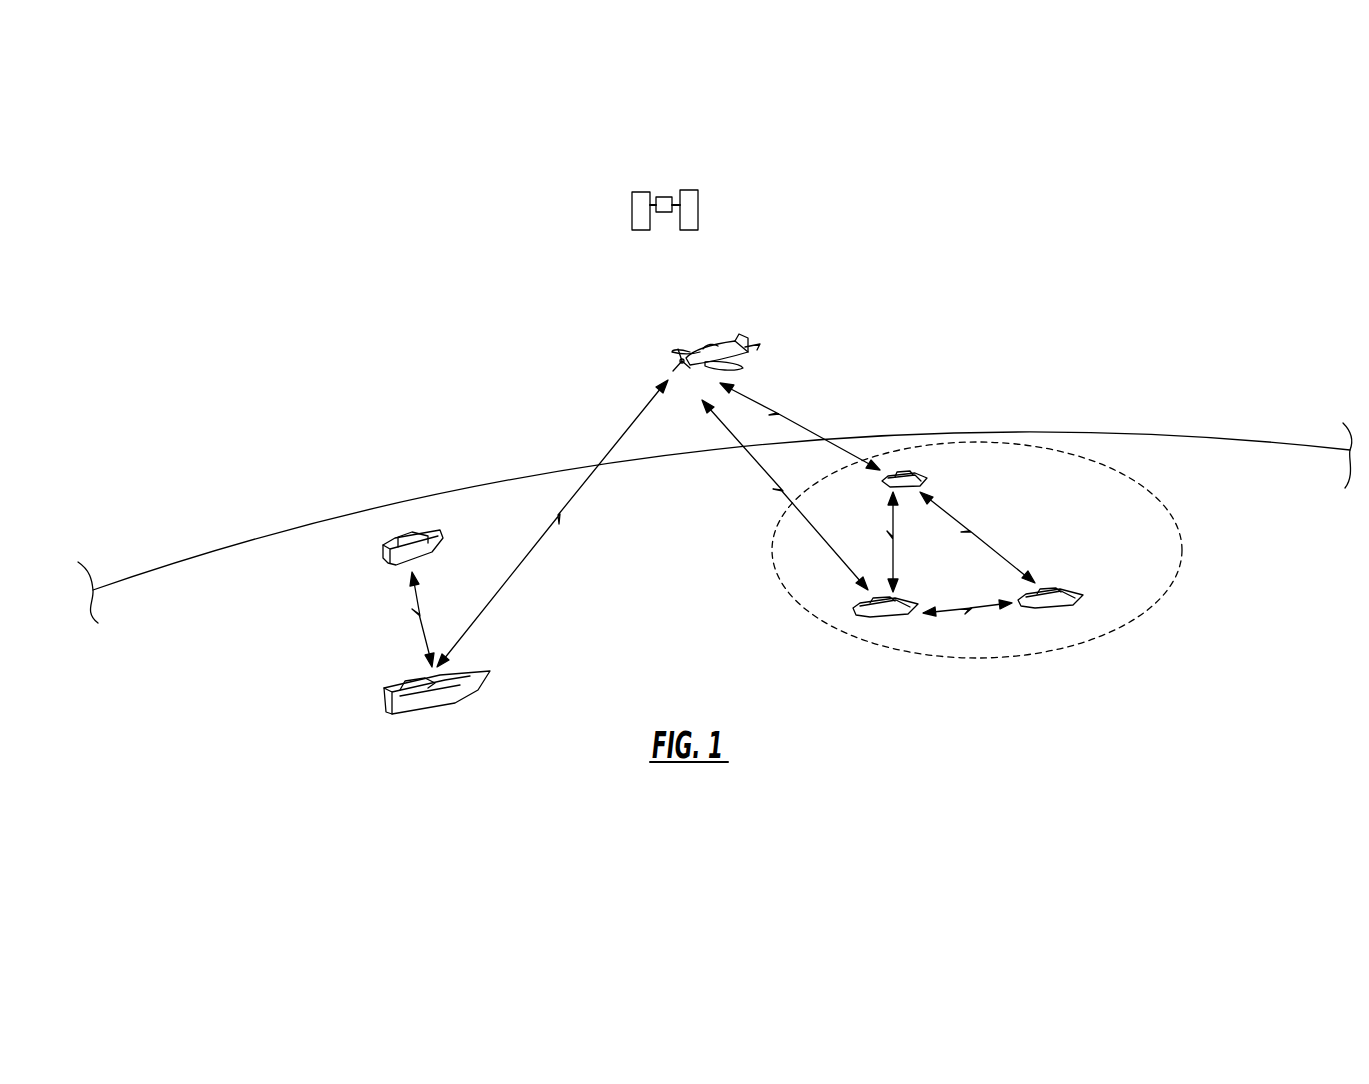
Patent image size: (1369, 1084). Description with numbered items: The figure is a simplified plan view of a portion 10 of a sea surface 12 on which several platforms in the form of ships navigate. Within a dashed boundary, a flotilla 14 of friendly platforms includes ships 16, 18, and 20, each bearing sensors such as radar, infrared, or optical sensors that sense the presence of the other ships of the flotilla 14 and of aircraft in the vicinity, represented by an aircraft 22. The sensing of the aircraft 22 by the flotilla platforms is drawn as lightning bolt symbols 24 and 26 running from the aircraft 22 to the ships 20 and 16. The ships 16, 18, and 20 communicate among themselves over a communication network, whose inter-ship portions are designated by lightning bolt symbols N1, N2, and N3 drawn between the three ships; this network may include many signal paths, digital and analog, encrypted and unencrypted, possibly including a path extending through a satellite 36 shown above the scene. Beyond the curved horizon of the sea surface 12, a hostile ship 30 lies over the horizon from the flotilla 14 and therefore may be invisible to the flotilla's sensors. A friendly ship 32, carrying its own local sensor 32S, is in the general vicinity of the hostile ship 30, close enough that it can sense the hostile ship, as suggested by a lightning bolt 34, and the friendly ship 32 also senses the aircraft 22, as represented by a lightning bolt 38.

The portion of sea surface 10 is at (566, 747).
The sea surface 12 is at (290, 563).
The flotilla 14 is at (1116, 565).
The ship 16 is at (895, 616).
The ship 18 is at (1045, 607).
The ship 20 is at (915, 472).
The aircraft 22 is at (717, 345).
The lightning bolt symbol 24 is at (800, 422).
The lightning bolt symbol 26 is at (752, 465).
The hostile ship 30 is at (380, 552).
The friendly ship 32 is at (407, 682).
The sensor 32S is at (413, 680).
The lightning bolt 34 is at (410, 608).
The satellite 36 is at (635, 218).
The lightning bolt 38 is at (555, 515).
The inter-ship network portion N1 is at (890, 517).
The inter-ship network portion N2 is at (957, 608).
The inter-ship network portion N3 is at (1000, 553).